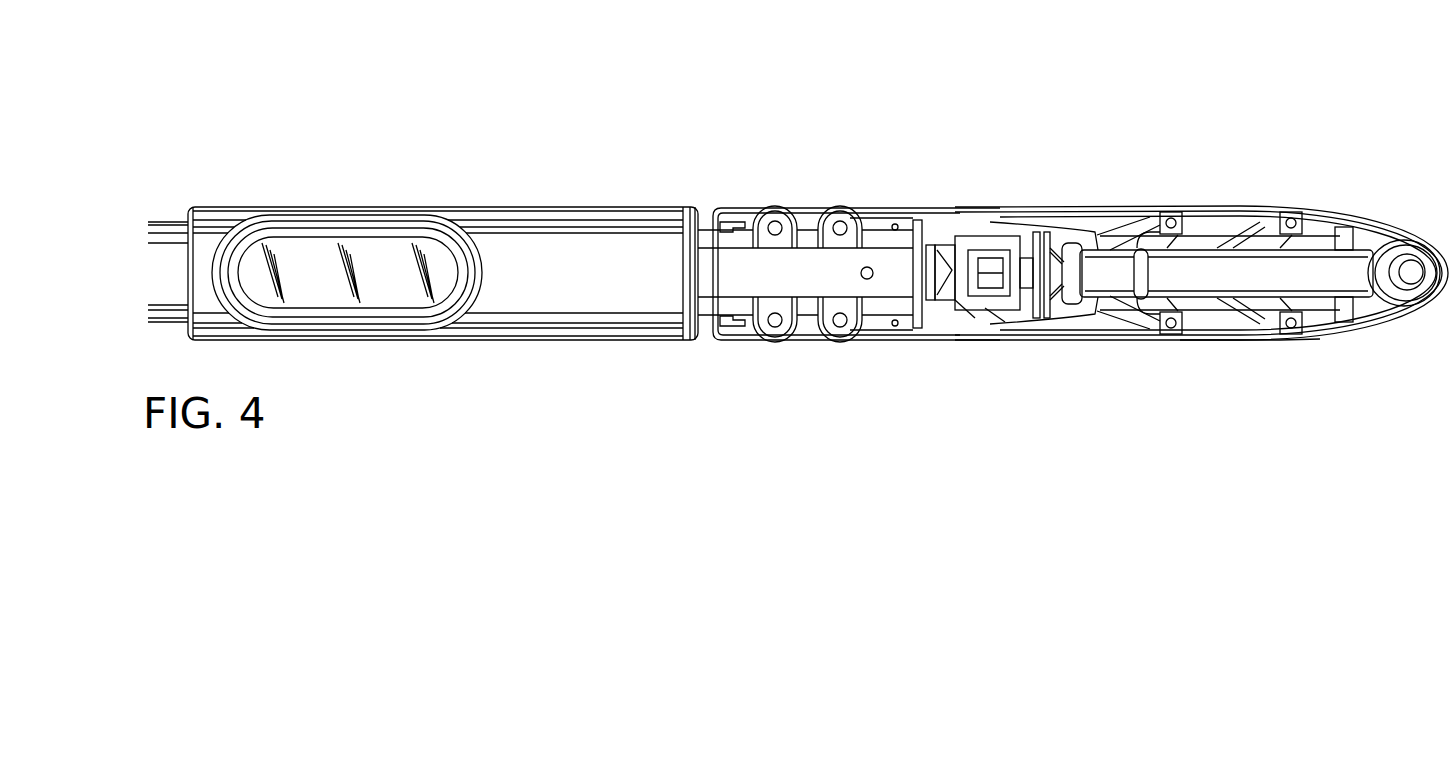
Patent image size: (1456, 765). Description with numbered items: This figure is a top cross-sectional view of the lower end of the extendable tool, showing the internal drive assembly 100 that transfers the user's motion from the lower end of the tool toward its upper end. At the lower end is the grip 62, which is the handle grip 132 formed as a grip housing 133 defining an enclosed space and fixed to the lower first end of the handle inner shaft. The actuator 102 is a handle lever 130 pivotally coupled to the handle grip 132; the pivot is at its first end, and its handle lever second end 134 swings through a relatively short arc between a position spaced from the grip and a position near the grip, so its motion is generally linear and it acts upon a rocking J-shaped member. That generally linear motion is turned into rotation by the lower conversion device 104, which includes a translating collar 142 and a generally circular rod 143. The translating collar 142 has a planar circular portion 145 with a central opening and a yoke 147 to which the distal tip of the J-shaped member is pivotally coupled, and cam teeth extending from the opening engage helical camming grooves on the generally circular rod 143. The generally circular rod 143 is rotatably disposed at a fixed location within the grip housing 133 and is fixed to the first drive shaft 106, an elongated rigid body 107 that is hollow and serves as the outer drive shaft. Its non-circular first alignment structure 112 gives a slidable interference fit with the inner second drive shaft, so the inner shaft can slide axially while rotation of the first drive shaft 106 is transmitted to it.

The internal drive assembly 100 is at (1147, 94).
The actuator 102 is at (1212, 268).
The lower conversion device 104 is at (1031, 186).
The first drive shaft 106 is at (812, 268).
The elongated rigid body 107 is at (731, 257).
The first alignment structure 112 is at (713, 260).
The handle lever 130 is at (1312, 265).
The handle grip 132 is at (1228, 340).
The grip housing 133 is at (1384, 244).
The handle lever second end 134 is at (1098, 275).
The translating collar 142 is at (990, 238).
The generally circular rod 143 is at (947, 248).
The planar circular portion 145 is at (948, 308).
The yoke 147 is at (1000, 310).
The grip 62 is at (1308, 342).